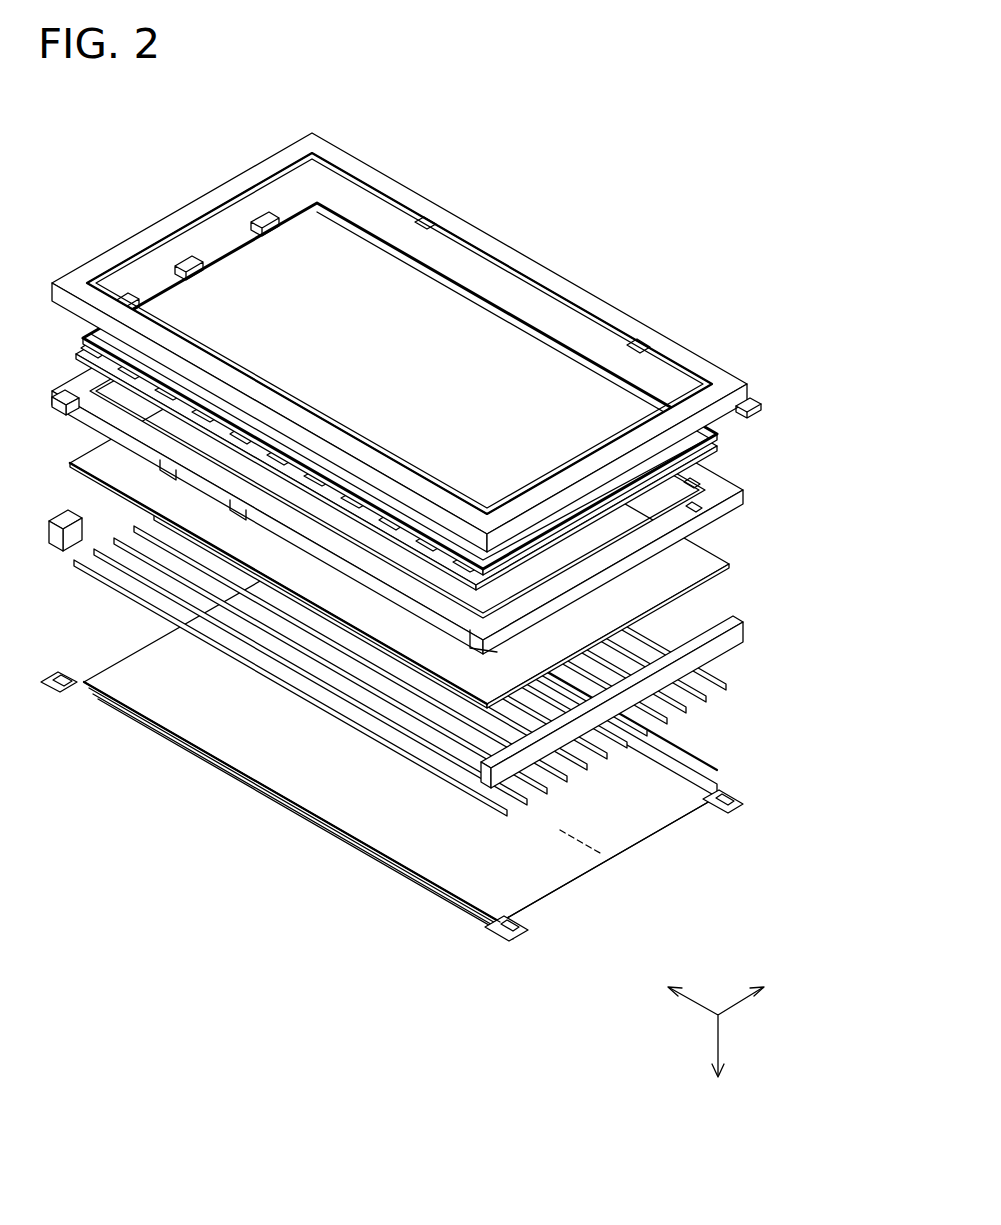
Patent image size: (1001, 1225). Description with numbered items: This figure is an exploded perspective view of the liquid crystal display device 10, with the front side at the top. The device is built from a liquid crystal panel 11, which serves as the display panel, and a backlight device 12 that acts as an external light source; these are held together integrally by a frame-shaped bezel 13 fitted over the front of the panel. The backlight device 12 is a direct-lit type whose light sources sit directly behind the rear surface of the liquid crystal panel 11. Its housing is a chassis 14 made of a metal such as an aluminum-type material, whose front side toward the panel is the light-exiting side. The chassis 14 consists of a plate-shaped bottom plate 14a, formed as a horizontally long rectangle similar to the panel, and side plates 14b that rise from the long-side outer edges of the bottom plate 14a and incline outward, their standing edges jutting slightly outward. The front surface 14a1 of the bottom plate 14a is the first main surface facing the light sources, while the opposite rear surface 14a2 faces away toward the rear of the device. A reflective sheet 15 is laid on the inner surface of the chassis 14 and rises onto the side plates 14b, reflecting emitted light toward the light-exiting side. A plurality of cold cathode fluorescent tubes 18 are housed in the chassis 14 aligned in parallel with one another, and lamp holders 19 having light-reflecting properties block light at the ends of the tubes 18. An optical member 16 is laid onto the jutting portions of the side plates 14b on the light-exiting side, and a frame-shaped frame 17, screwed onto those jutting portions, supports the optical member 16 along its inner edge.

The liquid crystal display device 10 is at (648, 218).
The liquid crystal panel 11 is at (498, 303).
The backlight device 12 is at (132, 797).
The bezel 13 is at (428, 202).
The chassis 14 is at (614, 864).
The bottom plate 14a is at (422, 762).
The front surface 14a1 is at (642, 810).
The second bottom plate portion 14a2 is at (540, 868).
The side plate 14b is at (738, 788).
The reflective sheet 15 is at (395, 835).
The optical member 16 is at (711, 563).
The frame 17 is at (732, 488).
The cold cathode fluorescent tube 18 is at (358, 678).
The lamp holder 19 is at (735, 616).